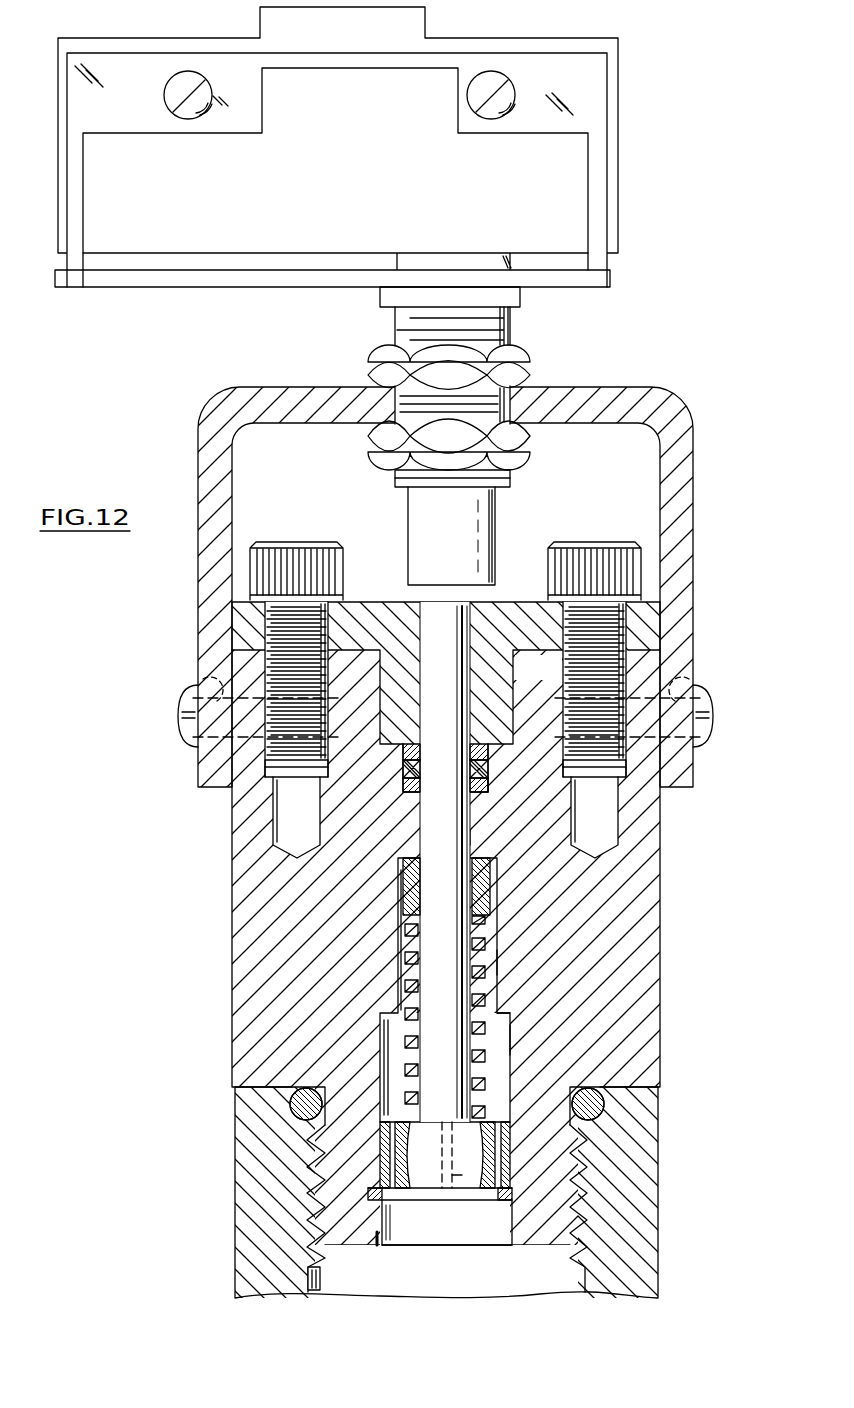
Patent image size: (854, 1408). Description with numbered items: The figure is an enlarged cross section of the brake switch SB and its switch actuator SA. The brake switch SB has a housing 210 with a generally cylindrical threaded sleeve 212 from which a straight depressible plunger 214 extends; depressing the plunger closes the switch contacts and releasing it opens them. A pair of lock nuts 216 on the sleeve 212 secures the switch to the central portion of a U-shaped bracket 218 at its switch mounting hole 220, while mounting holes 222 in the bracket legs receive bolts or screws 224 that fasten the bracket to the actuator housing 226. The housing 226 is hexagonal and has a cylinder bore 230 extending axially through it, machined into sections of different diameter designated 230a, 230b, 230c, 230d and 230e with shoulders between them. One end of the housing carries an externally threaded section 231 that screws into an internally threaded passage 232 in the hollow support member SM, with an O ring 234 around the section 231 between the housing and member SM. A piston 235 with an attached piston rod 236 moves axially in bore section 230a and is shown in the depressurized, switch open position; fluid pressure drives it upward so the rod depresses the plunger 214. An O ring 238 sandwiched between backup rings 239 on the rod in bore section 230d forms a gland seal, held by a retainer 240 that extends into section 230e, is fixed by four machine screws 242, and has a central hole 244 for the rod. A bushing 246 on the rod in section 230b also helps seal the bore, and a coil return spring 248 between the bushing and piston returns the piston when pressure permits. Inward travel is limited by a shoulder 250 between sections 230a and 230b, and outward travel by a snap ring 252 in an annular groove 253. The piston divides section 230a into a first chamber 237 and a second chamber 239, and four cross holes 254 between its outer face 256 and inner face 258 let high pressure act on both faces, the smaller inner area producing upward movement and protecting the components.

The housing 210 is at (157, 256).
The threaded sleeve 212 is at (512, 325).
The depressible plunger 214 is at (491, 520).
The lock nuts 216 is at (372, 360).
The U-shaped bracket 218 is at (689, 408).
The switch mounting hole 220 is at (511, 405).
The mounting holes 222 is at (200, 675).
The bolts or screws 224 is at (183, 701).
The actuator housing 226 is at (232, 838).
The cylinder bore 230 is at (400, 958).
The bore section 230a is at (508, 1039).
The bore section 230b is at (499, 961).
The bore section 230c is at (468, 838).
The bore section 230d is at (487, 790).
The bore section 230e is at (557, 646).
The externally threaded section 231 is at (584, 1203).
The internally threaded passage 232 is at (318, 1270).
The O ring 234 is at (603, 1106).
The piston 235 is at (512, 1150).
The piston rod 236 is at (460, 1020).
The first chamber 237 is at (503, 1220).
The O ring 238 is at (405, 770).
The backup rings 239 is at (403, 752).
The retainer 240 is at (371, 602).
The machine screws 242 is at (291, 548).
The hole 244 is at (468, 621).
The bushing 246 is at (483, 890).
The return spring 248 is at (487, 942).
The shoulder 250 is at (507, 1012).
The snap ring 252 is at (513, 1194).
The annular groove 253 is at (378, 1199).
The cross holes 254 is at (394, 1157).
The outer face 256 is at (436, 1190).
The inner face 258 is at (507, 1104).
The switch actuator SA is at (226, 963).
The brake switch SB is at (347, 205).
The support member SM is at (245, 1248).